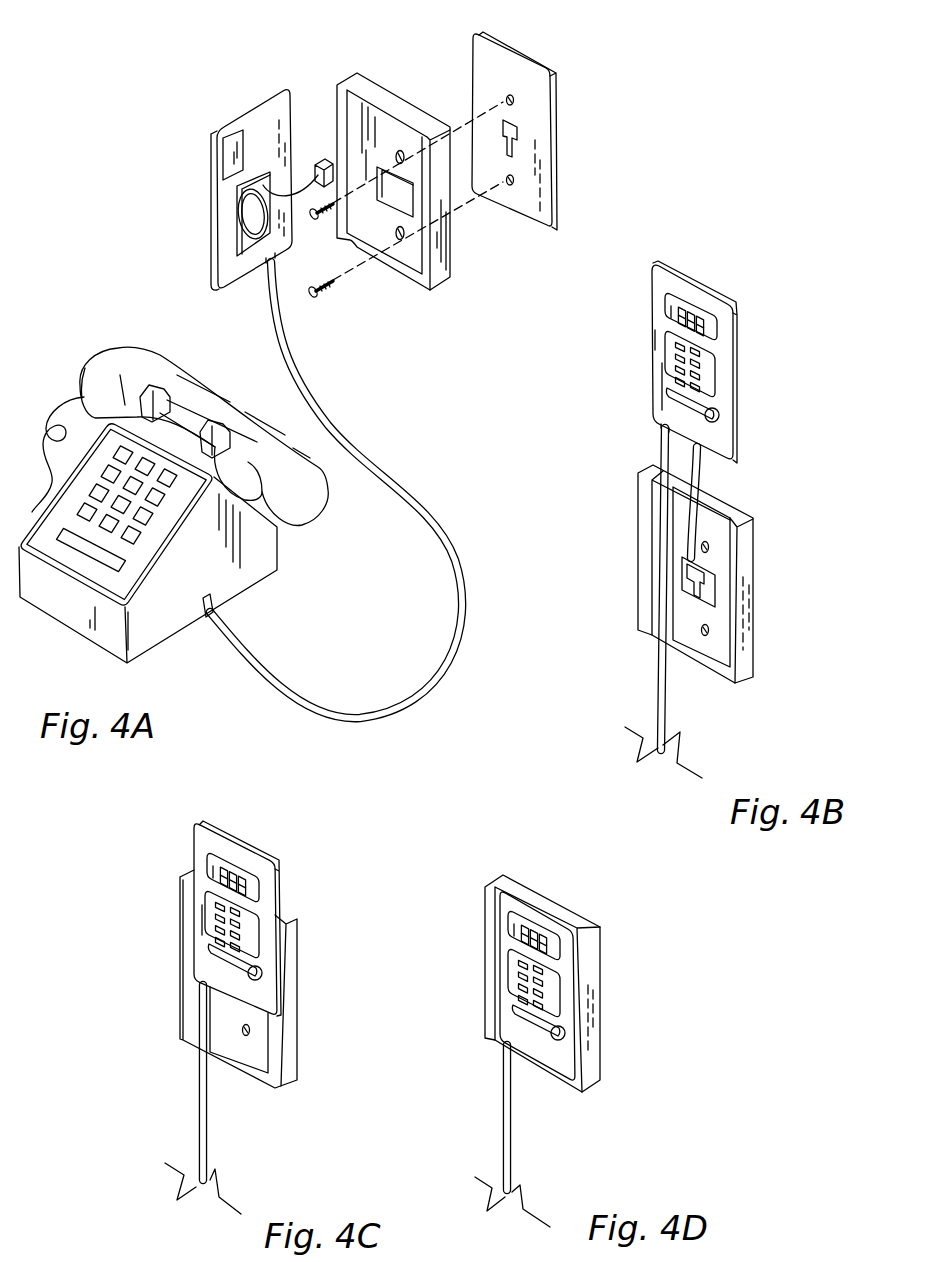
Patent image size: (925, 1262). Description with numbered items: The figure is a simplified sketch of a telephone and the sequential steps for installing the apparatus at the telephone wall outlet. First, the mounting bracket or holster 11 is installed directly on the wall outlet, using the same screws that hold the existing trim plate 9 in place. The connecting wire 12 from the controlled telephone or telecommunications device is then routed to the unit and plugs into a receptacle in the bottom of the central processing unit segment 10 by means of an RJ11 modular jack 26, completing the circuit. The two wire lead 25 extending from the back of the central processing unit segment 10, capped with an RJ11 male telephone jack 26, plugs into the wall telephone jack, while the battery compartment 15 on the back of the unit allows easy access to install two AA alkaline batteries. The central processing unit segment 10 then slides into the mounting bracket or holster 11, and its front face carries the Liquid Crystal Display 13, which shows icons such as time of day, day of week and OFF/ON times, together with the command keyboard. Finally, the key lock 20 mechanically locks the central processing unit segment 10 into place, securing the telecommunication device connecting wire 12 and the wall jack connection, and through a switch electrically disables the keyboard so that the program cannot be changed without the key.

In FIG. 4A, the wall plate 9 is at (548, 110).
In FIG. 4B, the central processing unit segment module 10 is at (720, 300).
In FIG. 4A, the mounting bracket or holster 11 is at (440, 287).
In FIG. 4B, the mounting bracket or holster 11 is at (747, 677).
In FIG. 4A, the connecting wire 12 is at (420, 510).
In FIG. 4B, the connecting wire 12 is at (667, 693).
In FIG. 4C, the Liquid Crystal Display (LCD) 13 is at (252, 885).
In FIG. 4A, the battery compartment 15 is at (218, 158).
In FIG. 4D, the key lock 20 is at (562, 1030).
In FIG. 4A, the two wire lead 25 is at (263, 222).
In FIG. 4A, the RJ11 male telephone jack 26 is at (517, 140).
In FIG. 4B, the RJ11 male telephone jack 26 is at (667, 432).